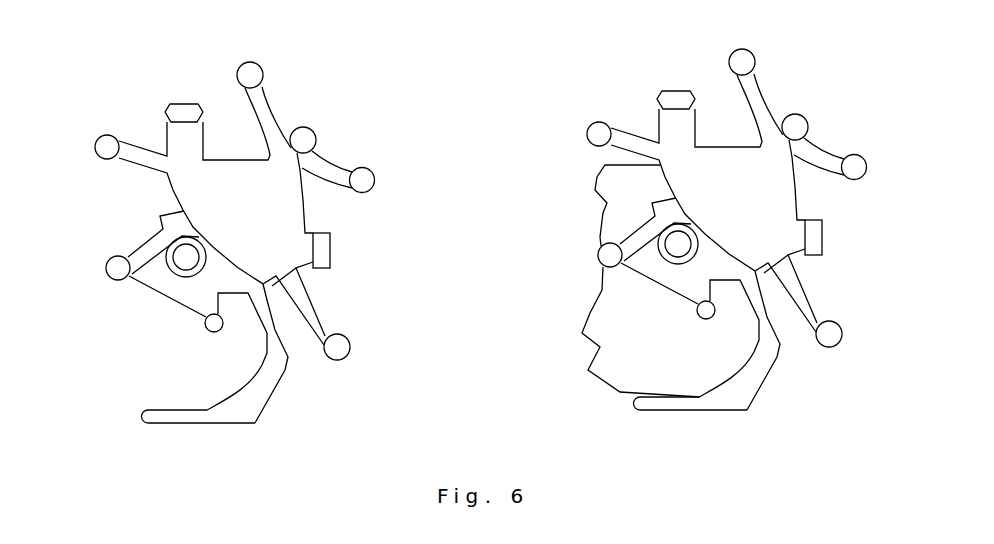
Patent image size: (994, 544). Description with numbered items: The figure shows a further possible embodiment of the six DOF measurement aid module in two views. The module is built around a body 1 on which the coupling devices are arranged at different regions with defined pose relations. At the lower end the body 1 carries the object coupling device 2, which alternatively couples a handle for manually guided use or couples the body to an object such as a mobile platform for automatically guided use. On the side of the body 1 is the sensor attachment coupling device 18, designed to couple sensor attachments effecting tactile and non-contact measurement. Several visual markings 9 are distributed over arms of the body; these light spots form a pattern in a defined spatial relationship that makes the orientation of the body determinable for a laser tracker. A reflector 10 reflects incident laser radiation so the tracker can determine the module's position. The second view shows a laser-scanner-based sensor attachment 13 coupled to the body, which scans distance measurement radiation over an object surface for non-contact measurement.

The body 1 is at (254, 214).
The object coupling device 2 is at (216, 422).
The visual markings 9 is at (105, 136).
The reflector 10 is at (181, 104).
The laser-scanner-based sensor attachment 13 is at (668, 354).
The sensor attachment coupling device 18 is at (139, 186).